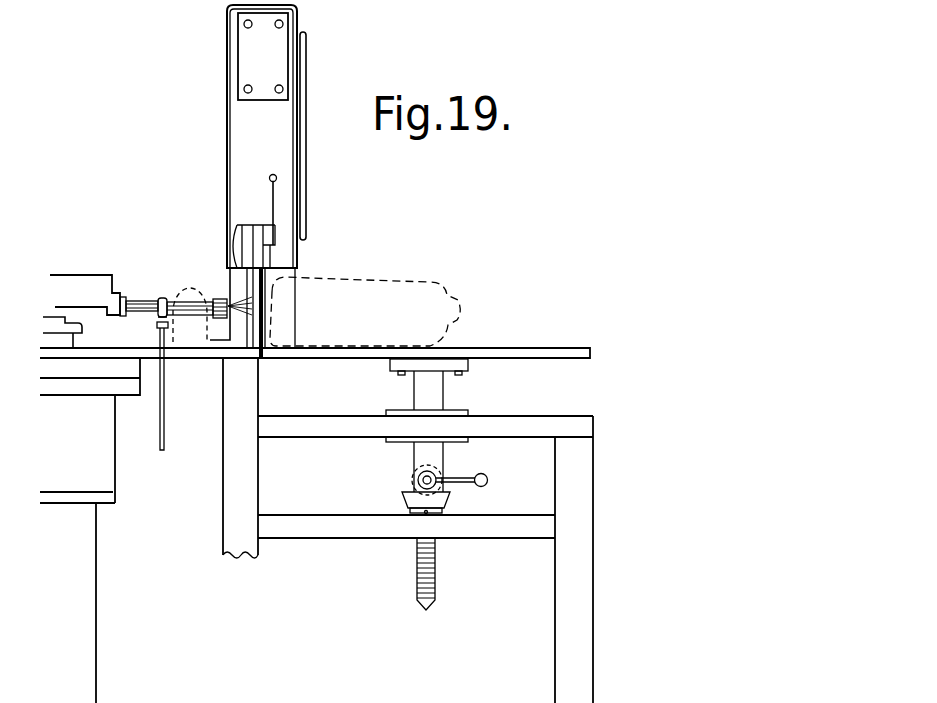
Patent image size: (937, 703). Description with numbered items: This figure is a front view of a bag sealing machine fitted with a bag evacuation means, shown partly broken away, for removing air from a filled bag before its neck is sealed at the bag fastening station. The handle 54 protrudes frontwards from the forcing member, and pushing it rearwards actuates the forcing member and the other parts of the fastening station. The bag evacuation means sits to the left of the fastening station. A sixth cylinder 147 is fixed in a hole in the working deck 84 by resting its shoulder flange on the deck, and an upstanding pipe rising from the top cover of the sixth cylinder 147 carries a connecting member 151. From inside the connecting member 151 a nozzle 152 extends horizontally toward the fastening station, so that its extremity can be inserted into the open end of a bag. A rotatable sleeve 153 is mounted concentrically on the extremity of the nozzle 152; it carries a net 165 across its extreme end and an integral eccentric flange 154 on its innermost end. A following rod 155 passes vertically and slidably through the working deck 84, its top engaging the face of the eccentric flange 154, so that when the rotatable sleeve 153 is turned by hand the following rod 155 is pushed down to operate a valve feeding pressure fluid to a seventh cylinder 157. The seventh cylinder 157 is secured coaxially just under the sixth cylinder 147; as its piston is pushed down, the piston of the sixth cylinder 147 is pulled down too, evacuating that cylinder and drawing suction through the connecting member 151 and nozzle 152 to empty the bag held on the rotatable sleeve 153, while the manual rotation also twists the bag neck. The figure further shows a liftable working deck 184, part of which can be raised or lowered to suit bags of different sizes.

The handle 54 is at (276, 210).
The working deck 84 is at (198, 359).
The sixth cylinder 147 is at (110, 456).
The connecting member 151 is at (64, 274).
The nozzle 152 is at (125, 300).
The rotatable sleeve 153 is at (170, 299).
The eccentric flange 154 is at (155, 316).
The following rod 155 is at (158, 400).
The seventh cylinder 157 is at (96, 540).
The net 165 is at (227, 300).
The liftable working deck 184 is at (527, 348).